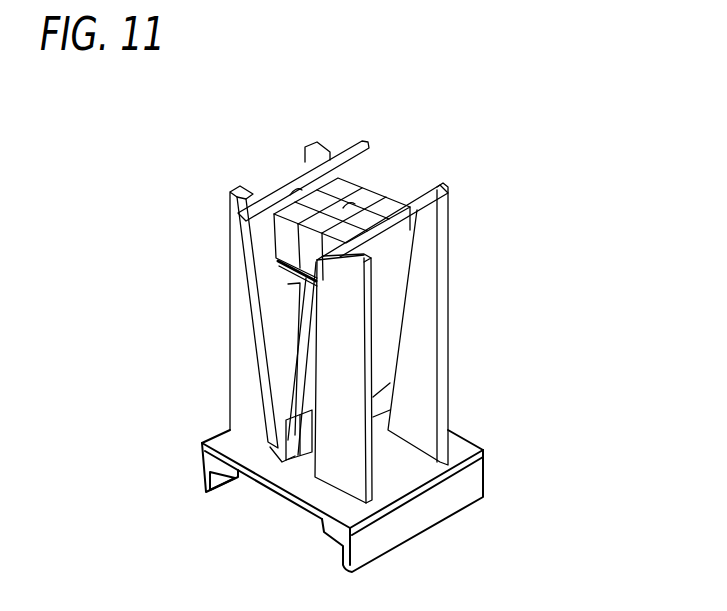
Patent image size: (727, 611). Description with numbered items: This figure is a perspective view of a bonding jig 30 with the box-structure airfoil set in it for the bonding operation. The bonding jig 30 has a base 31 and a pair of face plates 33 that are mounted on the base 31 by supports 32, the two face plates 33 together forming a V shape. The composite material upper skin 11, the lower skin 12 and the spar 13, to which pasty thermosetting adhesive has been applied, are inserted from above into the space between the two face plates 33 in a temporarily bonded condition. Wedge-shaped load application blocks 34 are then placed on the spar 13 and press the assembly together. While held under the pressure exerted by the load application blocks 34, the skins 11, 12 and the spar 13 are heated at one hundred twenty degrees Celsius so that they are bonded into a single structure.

The bonding jig 30 is at (477, 219).
The base 31 is at (312, 494).
The supports 32 is at (251, 202).
The face plates 33 is at (344, 152).
The load application blocks 34 is at (368, 216).
The upper skin 11 is at (283, 313).
The lower skin 12 is at (293, 340).
The spar 13 is at (276, 258).